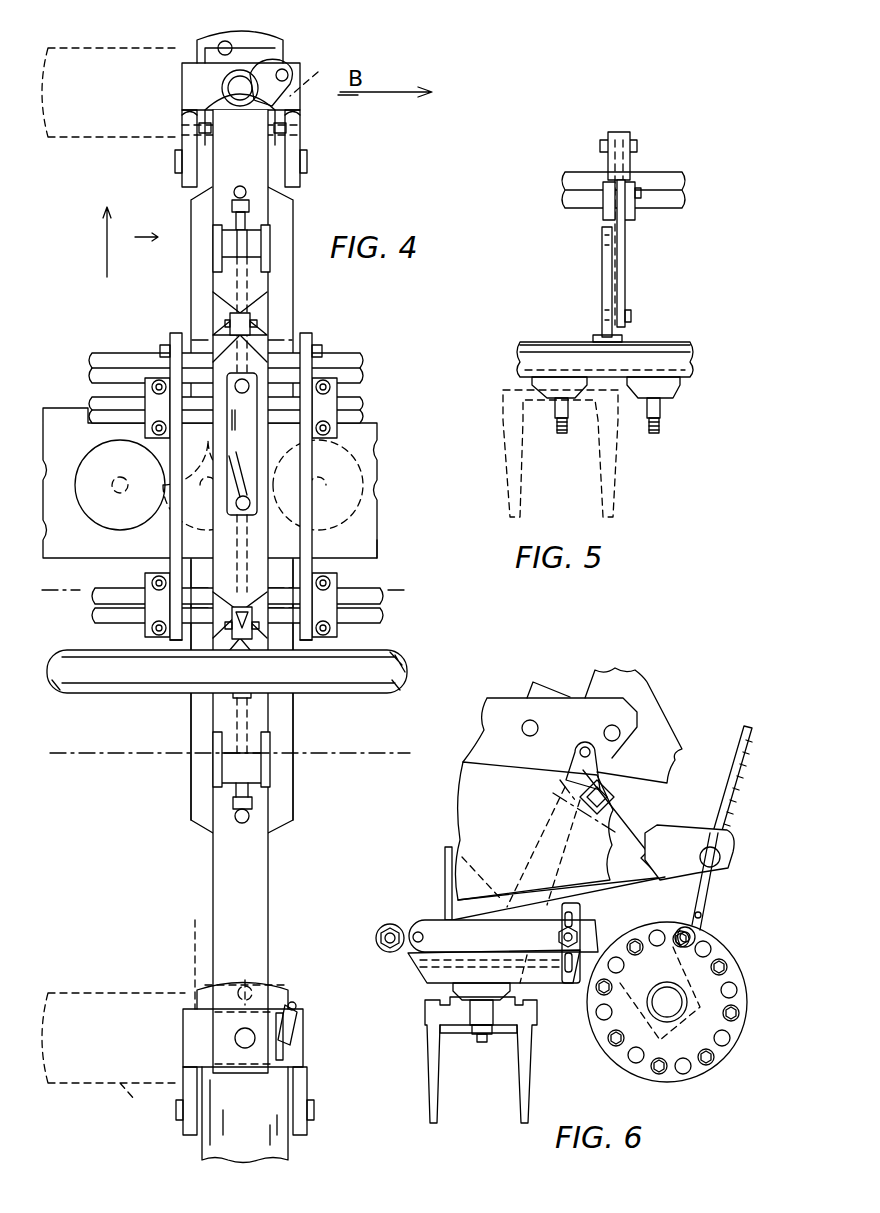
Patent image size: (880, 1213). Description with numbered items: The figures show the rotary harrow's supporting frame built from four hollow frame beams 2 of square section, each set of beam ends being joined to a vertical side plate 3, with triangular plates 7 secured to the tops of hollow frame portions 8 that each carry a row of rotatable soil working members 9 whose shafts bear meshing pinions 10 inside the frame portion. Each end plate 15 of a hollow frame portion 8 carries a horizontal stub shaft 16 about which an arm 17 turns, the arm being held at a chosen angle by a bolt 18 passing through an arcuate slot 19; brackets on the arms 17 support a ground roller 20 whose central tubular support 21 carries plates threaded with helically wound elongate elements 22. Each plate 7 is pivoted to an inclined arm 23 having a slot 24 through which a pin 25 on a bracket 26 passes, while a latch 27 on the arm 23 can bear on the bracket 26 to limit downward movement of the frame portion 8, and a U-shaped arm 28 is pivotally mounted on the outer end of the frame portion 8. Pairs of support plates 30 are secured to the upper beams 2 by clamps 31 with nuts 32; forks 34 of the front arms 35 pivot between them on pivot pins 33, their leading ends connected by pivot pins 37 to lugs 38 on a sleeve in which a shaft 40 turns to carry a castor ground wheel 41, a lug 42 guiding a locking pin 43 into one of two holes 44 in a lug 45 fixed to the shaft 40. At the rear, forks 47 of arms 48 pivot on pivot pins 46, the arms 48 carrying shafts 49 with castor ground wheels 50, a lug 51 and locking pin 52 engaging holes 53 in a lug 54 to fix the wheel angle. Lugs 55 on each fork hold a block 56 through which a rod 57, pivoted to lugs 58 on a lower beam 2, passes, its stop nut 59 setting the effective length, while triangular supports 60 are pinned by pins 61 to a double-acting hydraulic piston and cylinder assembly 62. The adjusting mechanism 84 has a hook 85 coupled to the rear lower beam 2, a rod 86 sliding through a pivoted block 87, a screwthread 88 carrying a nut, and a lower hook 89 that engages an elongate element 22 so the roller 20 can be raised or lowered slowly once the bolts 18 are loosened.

In FIG. 4, the frame beam 2 is at (365, 385).
In FIG. 5, the frame beam 2 is at (565, 188).
In FIG. 6, the frame beam 2 is at (612, 793).
In FIG. 6, the side plate 3 is at (620, 890).
In FIG. 5, the plate 7 is at (602, 275).
In FIG. 6, the plate 7 is at (445, 866).
In FIG. 4, the hollow frame portion 8 is at (375, 440).
In FIG. 5, the hollow frame portion 8 is at (520, 355).
In FIG. 6, the hollow frame portion 8 is at (420, 975).
In FIG. 5, the soil working member 9 is at (565, 466).
In FIG. 6, the soil working member 9 is at (485, 1072).
In FIG. 4, the pinion 10 is at (377, 536).
In FIG. 6, the end plate 15 is at (560, 896).
In FIG. 6, the stub shaft 16 is at (420, 930).
In FIG. 6, the arm 17 is at (495, 882).
In FIG. 6, the bolt 18 is at (558, 937).
In FIG. 6, the arcuate slot 19 is at (572, 983).
In FIG. 4, the ground roller 20 is at (362, 758).
In FIG. 6, the ground roller 20 is at (610, 1072).
In FIG. 4, the central tubular support 21 is at (400, 657).
In FIG. 6, the central tubular support 21 is at (682, 1016).
In FIG. 6, the elongate element 22 is at (688, 948).
In FIG. 5, the arm 23 is at (625, 288).
In FIG. 6, the arm 23 is at (525, 858).
In FIG. 5, the slot 24 is at (641, 210).
In FIG. 5, the pin 25 is at (603, 212).
In FIG. 6, the pin 25 is at (553, 796).
In FIG. 5, the bracket 26 is at (628, 222).
In FIG. 6, the bracket 26 is at (598, 826).
In FIG. 5, the latch 27 is at (624, 131).
In FIG. 6, the latch 27 is at (575, 755).
In FIG. 6, the arm 28 is at (378, 932).
In FIG. 4, the support plate 30 is at (174, 332).
In FIG. 6, the support plate 30 is at (503, 703).
In FIG. 4, the clamp 31 is at (148, 440).
In FIG. 4, the nut 32 is at (157, 380).
In FIG. 4, the pivot pin 33 is at (322, 350).
In FIG. 4, the fork 34 is at (293, 222).
In FIG. 4, the arm 35 is at (140, 242).
In FIG. 4, the pivot pin 37 is at (287, 128).
In FIG. 4, the lug 38 is at (181, 114).
In FIG. 4, the shaft 40 is at (228, 88).
In FIG. 4, the castor ground wheel 41 is at (196, 40).
In FIG. 4, the lug 42 is at (288, 66).
In FIG. 4, the locking pin 43 is at (318, 72).
In FIG. 4, the hole 44 is at (224, 41).
In FIG. 4, the lug 45 is at (175, 60).
In FIG. 4, the pivot pin 46 is at (150, 628).
In FIG. 6, the pivot pin 46 is at (608, 728).
In FIG. 4, the fork 47 is at (191, 722).
In FIG. 6, the fork 47 is at (550, 682).
In FIG. 4, the arm 48 is at (275, 880).
In FIG. 4, the shaft 49 is at (235, 1040).
In FIG. 4, the castor ground wheel 50 is at (210, 1145).
In FIG. 4, the lug 51 is at (297, 1040).
In FIG. 4, the locking pin 52 is at (297, 1003).
In FIG. 4, the hole 53 is at (246, 984).
In FIG. 4, the lug 54 is at (206, 1000).
In FIG. 4, the lug 55 is at (270, 268).
In FIG. 4, the block 56 is at (268, 243).
In FIG. 4, the rod 57 is at (238, 186).
In FIG. 4, the lug 58 is at (232, 678).
In FIG. 4, the nut 59 is at (246, 200).
In FIG. 4, the support 60 is at (268, 302).
In FIG. 6, the support 60 is at (647, 690).
In FIG. 4, the pin 61 is at (257, 322).
In FIG. 4, the hydraulic piston and cylinder assembly 62 is at (255, 470).
In FIG. 6, the adjusting mechanism 84 is at (737, 731).
In FIG. 6, the hook 85 is at (694, 828).
In FIG. 6, the rod 86 is at (703, 907).
In FIG. 6, the block 87 is at (722, 855).
In FIG. 6, the screwthread 88 is at (727, 790).
In FIG. 6, the hook 89 is at (694, 912).